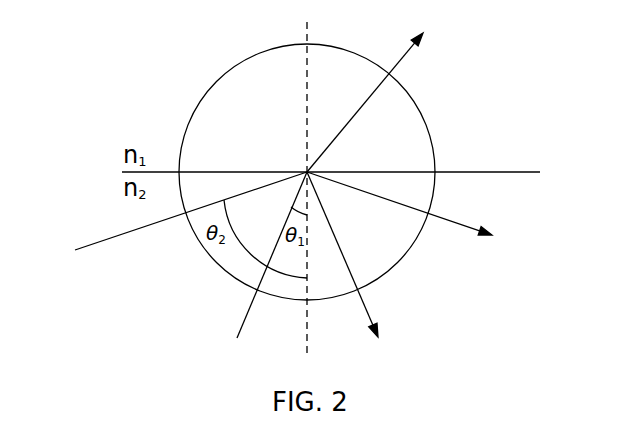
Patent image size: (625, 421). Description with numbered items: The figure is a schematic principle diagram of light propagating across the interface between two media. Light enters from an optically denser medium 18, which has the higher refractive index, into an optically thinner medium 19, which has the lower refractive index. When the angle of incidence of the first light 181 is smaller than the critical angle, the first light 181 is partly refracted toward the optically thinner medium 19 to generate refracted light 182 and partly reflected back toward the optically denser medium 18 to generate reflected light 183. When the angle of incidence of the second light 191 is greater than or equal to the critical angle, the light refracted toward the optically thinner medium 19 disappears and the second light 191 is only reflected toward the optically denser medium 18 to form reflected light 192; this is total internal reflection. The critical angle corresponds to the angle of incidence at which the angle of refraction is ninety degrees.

The optically denser medium 18 is at (388, 255).
The optically thinner medium 19 is at (235, 103).
The first light 181 is at (243, 318).
The refracted light 182 is at (402, 59).
The reflected light 183 is at (372, 308).
The second light 191 is at (157, 223).
The reflected light 192 is at (422, 212).